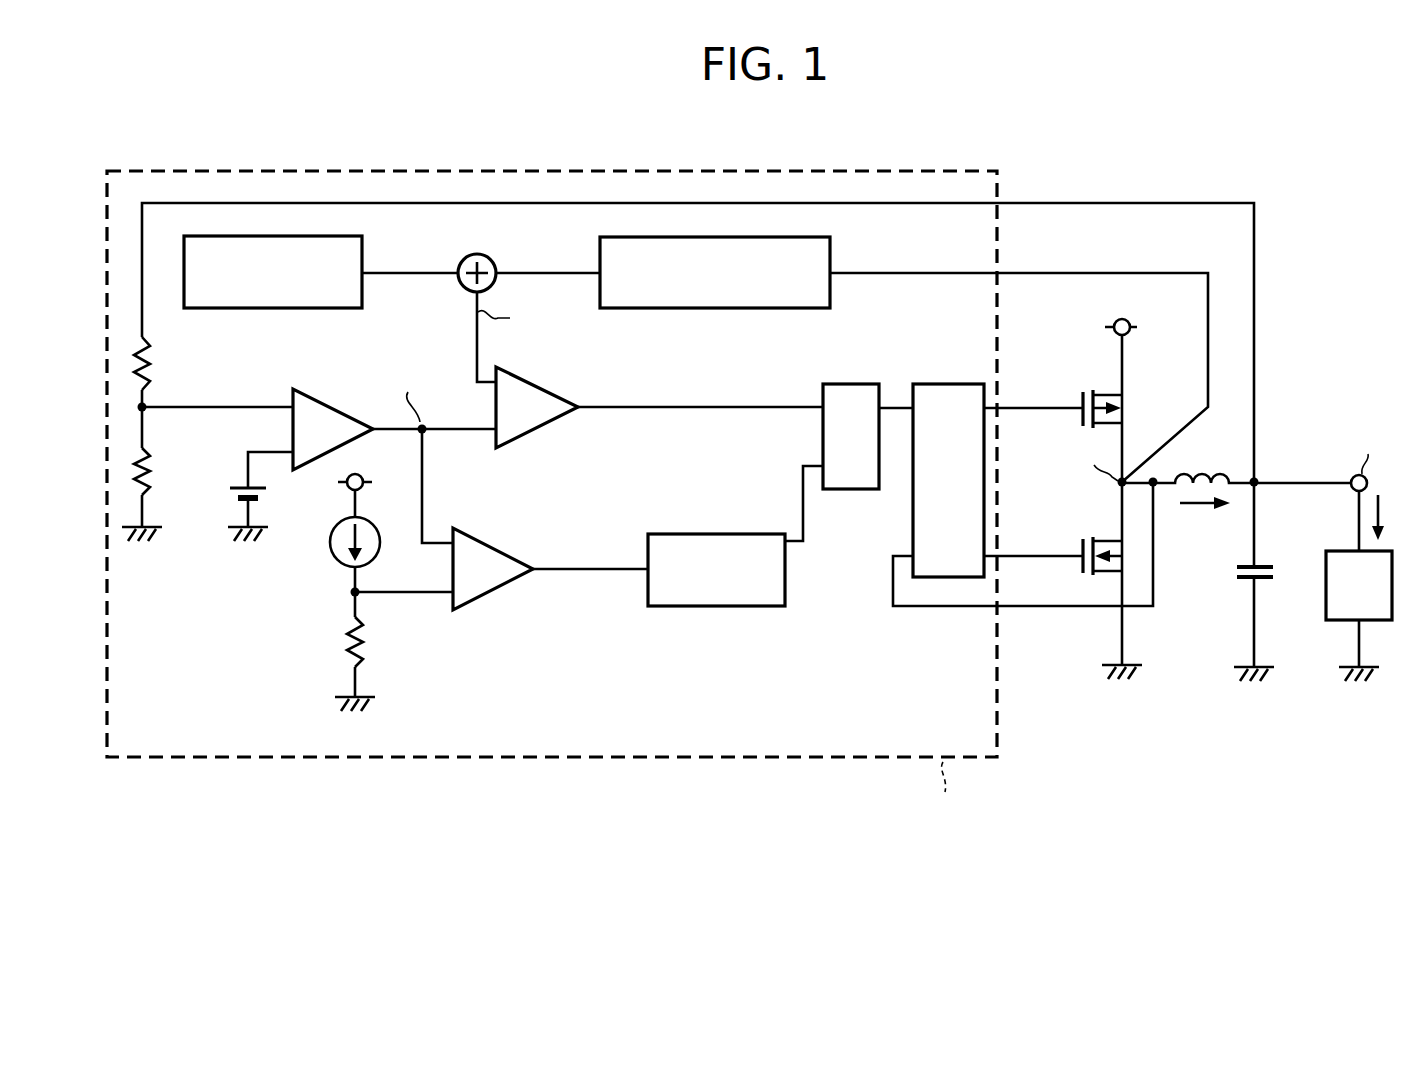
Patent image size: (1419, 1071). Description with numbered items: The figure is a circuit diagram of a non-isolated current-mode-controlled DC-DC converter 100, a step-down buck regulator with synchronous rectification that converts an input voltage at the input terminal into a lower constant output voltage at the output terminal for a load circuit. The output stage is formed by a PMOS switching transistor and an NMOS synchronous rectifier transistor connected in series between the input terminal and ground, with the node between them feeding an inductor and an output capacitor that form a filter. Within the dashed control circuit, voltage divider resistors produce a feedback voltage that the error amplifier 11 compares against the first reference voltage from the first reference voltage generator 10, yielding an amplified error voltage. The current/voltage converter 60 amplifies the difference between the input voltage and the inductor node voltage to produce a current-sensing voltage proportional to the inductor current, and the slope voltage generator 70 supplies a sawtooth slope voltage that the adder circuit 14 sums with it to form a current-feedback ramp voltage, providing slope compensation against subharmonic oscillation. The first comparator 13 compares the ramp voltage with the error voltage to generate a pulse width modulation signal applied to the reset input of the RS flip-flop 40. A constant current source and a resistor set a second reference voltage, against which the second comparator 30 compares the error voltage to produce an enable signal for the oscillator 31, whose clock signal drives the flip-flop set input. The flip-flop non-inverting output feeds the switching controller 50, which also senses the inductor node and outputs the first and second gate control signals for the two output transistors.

The DC-DC converter 100 is at (1247, 139).
The first reference voltage generator 10 is at (222, 498).
The error amplifier 11 is at (330, 398).
The first comparator 13 is at (550, 385).
The adder circuit 14 is at (469, 289).
The second comparator 30 is at (487, 540).
The oscillator 31 is at (715, 607).
The RS flip-flop 40 is at (855, 384).
The switching controller 50 is at (951, 384).
The current/voltage converter 60 is at (830, 246).
The slope voltage generator 70 is at (272, 309).